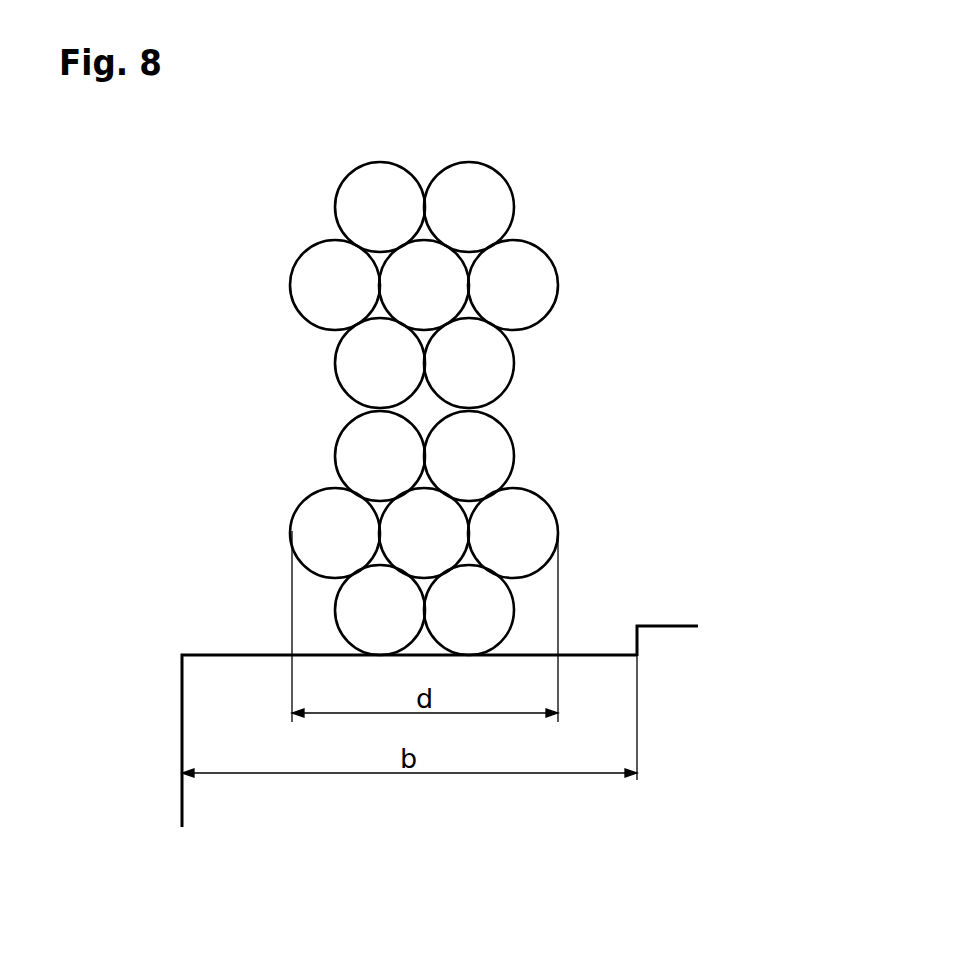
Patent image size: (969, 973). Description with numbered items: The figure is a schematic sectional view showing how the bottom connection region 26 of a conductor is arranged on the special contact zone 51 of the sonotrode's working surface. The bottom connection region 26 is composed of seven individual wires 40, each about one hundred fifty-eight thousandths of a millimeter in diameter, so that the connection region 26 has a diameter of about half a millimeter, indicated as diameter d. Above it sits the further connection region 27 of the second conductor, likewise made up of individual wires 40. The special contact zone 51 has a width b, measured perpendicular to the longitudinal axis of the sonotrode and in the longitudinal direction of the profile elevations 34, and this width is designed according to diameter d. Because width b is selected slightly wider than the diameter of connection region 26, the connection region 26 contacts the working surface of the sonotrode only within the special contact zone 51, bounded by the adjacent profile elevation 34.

The connection region 27 is at (547, 242).
The individual wire 40 is at (533, 295).
The bottom connection region 26 is at (282, 551).
The special contact zone 51 is at (530, 653).
The profile elevation 34 is at (676, 622).